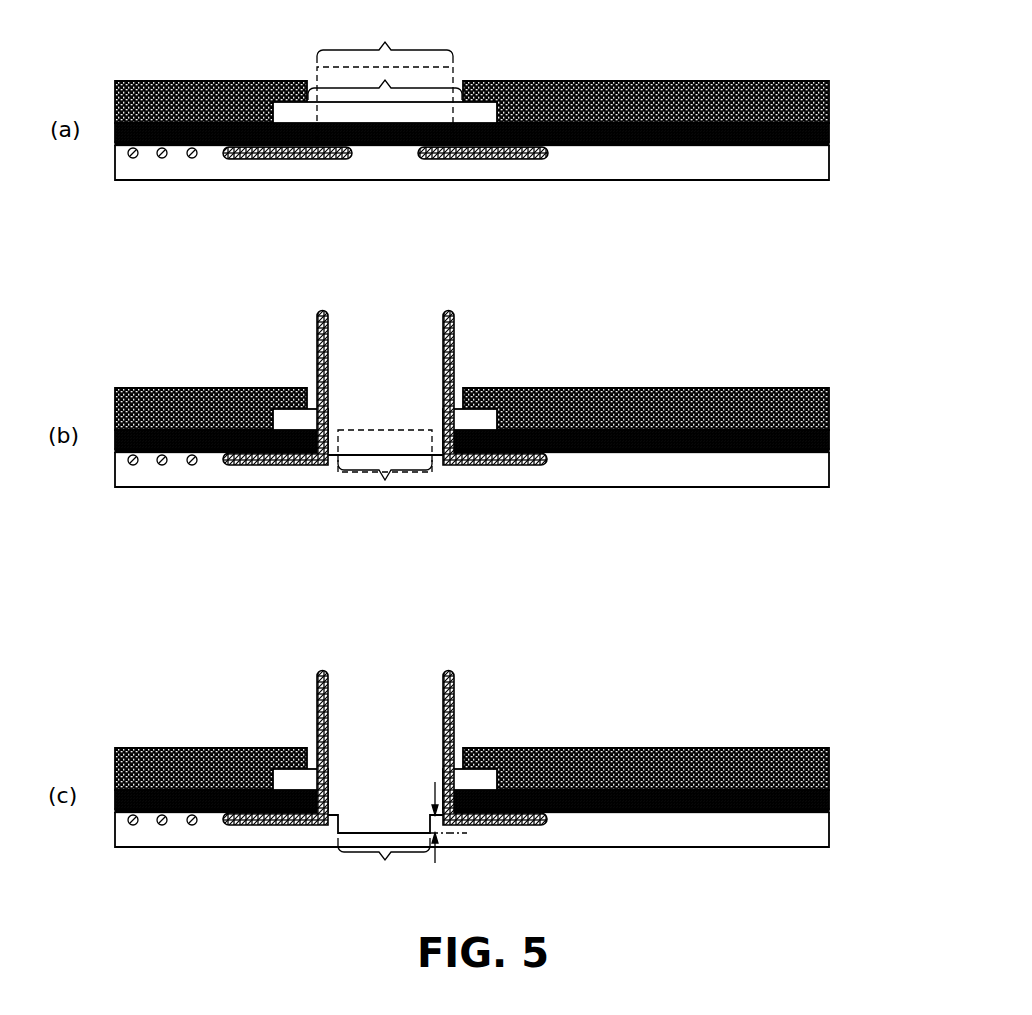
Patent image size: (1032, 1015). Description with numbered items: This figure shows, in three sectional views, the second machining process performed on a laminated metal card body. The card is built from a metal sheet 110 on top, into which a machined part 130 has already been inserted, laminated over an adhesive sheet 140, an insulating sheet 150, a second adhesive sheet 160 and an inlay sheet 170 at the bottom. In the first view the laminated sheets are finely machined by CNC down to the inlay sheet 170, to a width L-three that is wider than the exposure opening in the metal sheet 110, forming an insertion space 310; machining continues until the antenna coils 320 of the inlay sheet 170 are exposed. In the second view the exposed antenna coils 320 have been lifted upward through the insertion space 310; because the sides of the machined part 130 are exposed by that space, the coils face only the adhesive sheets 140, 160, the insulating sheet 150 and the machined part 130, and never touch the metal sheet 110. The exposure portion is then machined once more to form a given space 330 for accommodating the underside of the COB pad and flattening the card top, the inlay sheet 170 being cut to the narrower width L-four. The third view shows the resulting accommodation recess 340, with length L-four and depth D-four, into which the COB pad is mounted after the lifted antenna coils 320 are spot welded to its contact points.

The metal sheet 110 is at (507, 426).
The machined part 130 is at (293, 27).
The adhesive sheet 140 is at (507, 452).
The insulating sheet 150 is at (507, 466).
The adhesive sheet 160 is at (514, 491).
The inlay sheet 170 is at (507, 505).
The insertion space 310 is at (417, 81).
The antenna coils 320 is at (385, 568).
The given space 330 is at (385, 445).
The accommodation recess 340 is at (398, 816).